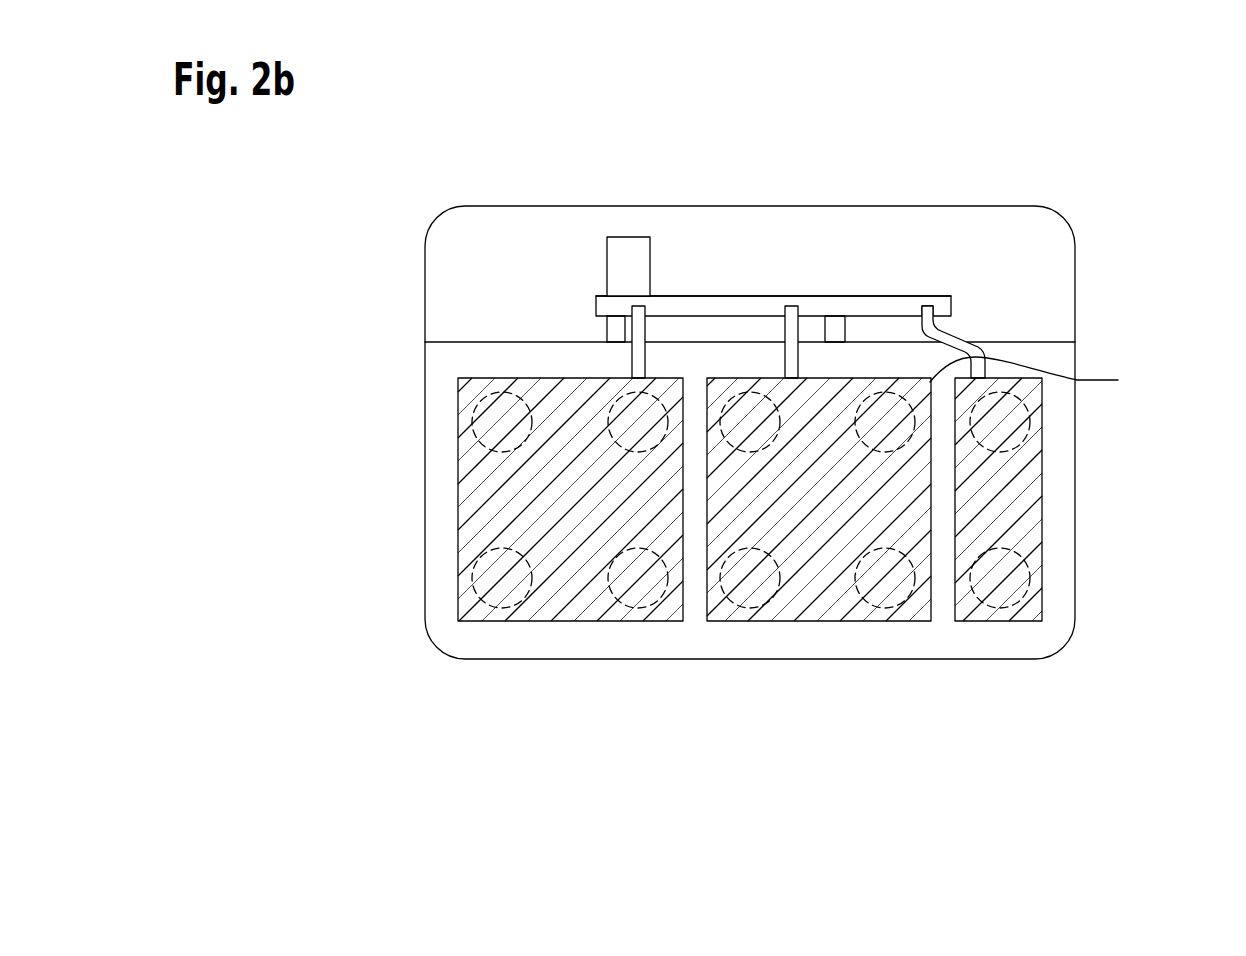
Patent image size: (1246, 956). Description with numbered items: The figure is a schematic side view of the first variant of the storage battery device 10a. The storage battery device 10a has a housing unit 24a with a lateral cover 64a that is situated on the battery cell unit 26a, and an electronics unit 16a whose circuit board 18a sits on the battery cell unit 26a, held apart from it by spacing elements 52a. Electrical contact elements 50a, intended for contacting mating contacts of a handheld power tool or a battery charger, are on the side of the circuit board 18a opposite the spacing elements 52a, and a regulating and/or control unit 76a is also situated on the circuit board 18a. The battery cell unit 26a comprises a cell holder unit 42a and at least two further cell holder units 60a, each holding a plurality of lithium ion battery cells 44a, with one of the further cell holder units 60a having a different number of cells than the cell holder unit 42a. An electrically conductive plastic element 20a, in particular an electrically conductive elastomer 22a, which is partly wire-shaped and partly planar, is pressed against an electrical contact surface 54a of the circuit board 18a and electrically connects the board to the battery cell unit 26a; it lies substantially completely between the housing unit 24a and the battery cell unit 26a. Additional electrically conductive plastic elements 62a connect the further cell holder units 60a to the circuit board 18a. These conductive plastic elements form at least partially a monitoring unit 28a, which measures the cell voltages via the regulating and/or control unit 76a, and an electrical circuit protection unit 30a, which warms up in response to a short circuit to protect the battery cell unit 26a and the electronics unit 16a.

The storage battery device 10a is at (1053, 247).
The electronics unit 16a is at (957, 297).
The circuit board 18a is at (757, 296).
The electrically conductive plastic element 20a is at (547, 610).
The electrically conductive elastomer 22a is at (570, 556).
The housing unit 24a is at (375, 310).
The battery cell unit 26a is at (1105, 458).
The monitoring unit 28a is at (663, 177).
The electrical circuit protection unit 30a is at (372, 526).
The cell holder unit 42a is at (647, 622).
The battery cells 44a is at (748, 395).
The electrical contact elements 50a is at (632, 257).
The spacing elements 52a is at (612, 330).
The electrical contact surface 54a is at (773, 305).
The further cell holder units 60a is at (818, 622).
The additional electrically conductive plastic elements 62a is at (1033, 398).
The lateral cover 64a is at (440, 280).
The regulating and/or control unit 76a is at (698, 303).